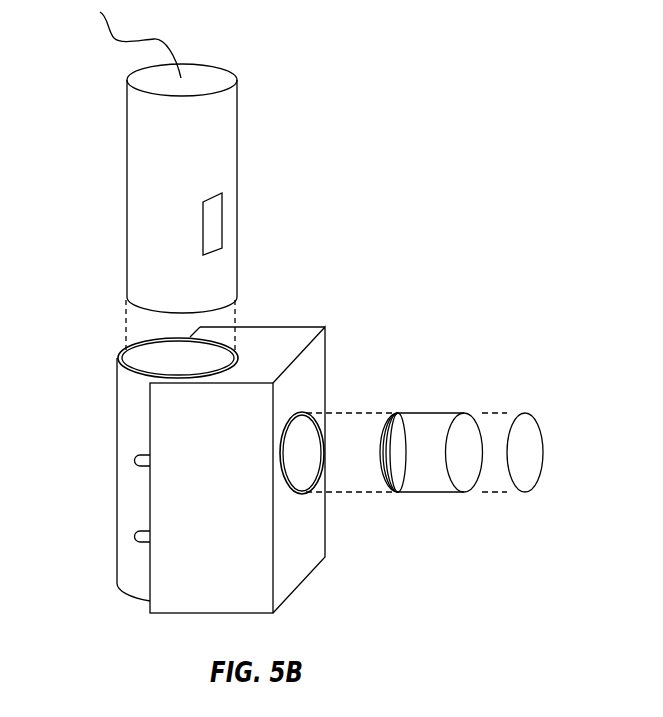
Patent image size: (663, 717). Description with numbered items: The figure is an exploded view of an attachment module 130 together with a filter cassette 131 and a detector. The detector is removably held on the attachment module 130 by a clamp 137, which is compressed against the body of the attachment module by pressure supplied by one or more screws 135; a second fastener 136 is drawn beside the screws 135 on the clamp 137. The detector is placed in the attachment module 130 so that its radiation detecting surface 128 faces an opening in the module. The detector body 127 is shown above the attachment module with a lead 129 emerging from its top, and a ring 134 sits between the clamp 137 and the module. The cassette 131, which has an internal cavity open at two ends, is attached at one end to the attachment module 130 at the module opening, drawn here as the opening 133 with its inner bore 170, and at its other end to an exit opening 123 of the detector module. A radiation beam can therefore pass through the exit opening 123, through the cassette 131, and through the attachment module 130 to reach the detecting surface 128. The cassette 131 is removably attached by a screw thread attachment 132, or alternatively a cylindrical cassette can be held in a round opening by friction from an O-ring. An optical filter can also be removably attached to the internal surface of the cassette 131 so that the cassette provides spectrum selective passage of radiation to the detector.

The exit opening 123 is at (532, 447).
The light source housing 127 is at (227, 133).
The radiation detecting surface 128 is at (215, 225).
The electrical cable 129 is at (163, 43).
The attachment module 130 is at (197, 603).
The cassette 131 is at (427, 485).
The screw thread attachment 132 is at (400, 413).
The aperture 133 is at (302, 412).
The ring 134 is at (142, 357).
The screws 135 is at (140, 540).
The tab 136 is at (140, 465).
The clamp 137 is at (127, 427).
The opening 170 is at (295, 470).